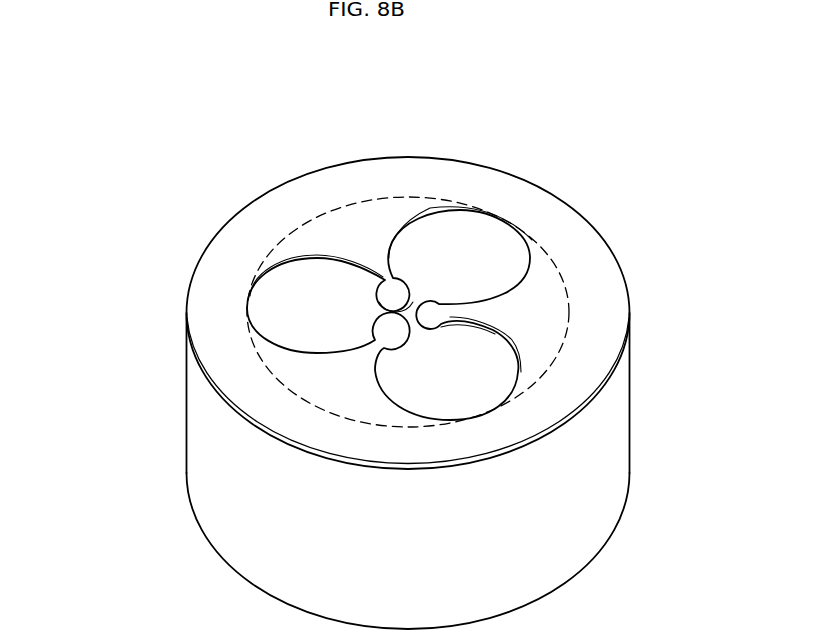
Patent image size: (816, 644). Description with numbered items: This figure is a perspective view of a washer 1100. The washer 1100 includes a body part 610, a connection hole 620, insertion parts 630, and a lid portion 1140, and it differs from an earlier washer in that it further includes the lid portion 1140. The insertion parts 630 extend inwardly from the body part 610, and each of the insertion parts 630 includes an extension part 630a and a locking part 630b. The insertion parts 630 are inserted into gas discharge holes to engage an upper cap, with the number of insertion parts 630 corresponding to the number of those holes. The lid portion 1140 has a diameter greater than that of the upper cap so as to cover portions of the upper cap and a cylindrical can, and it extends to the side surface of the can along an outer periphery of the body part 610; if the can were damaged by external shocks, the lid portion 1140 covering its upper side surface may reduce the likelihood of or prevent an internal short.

The washer 1100 is at (182, 153).
The body part 610 is at (567, 215).
The connection hole 620 is at (582, 333).
The insertion parts 630 is at (76, 282).
The extension part 630a is at (377, 345).
The locking part 630b is at (388, 323).
The lid portion 1140 is at (620, 432).